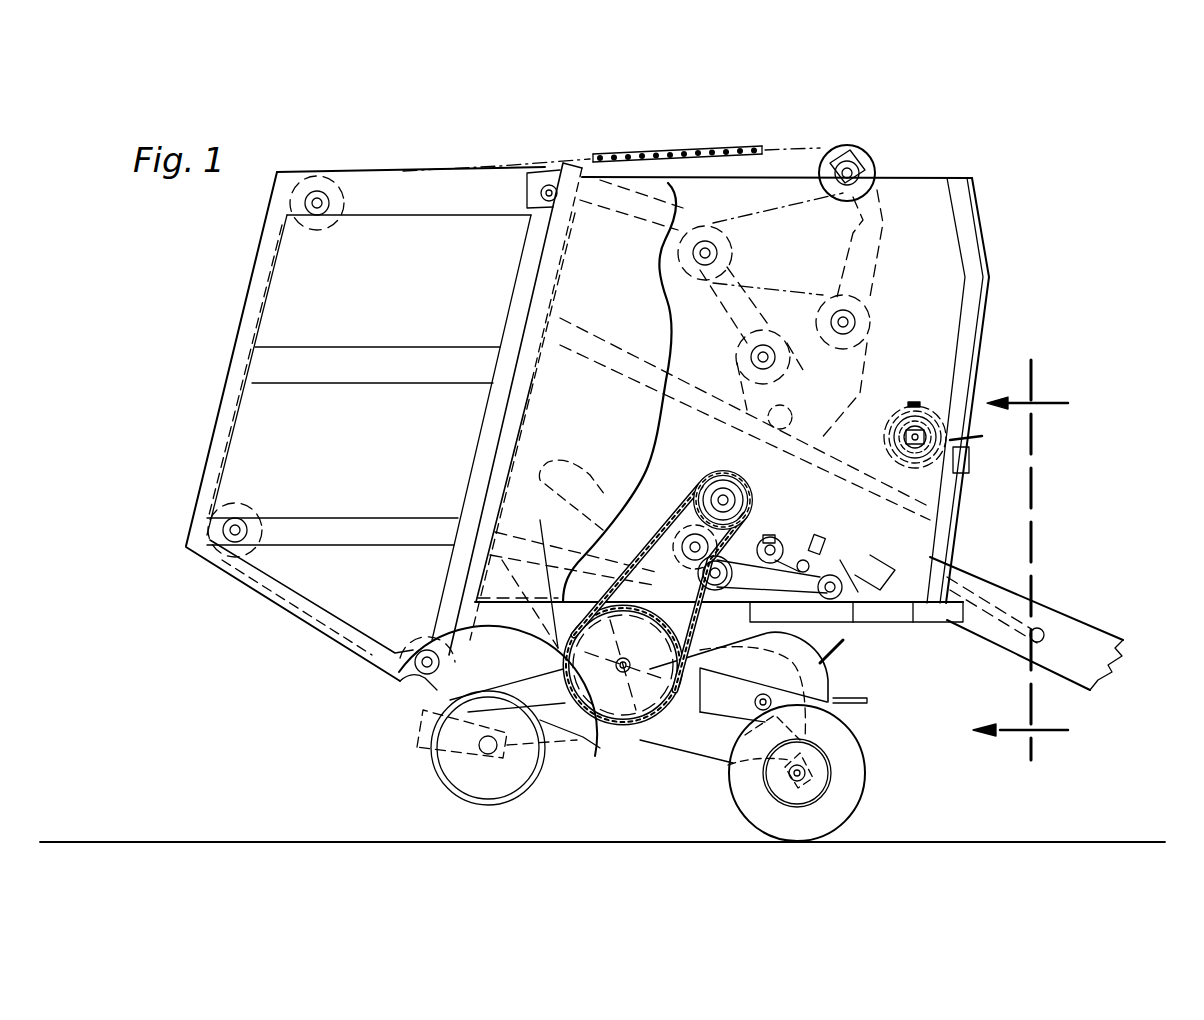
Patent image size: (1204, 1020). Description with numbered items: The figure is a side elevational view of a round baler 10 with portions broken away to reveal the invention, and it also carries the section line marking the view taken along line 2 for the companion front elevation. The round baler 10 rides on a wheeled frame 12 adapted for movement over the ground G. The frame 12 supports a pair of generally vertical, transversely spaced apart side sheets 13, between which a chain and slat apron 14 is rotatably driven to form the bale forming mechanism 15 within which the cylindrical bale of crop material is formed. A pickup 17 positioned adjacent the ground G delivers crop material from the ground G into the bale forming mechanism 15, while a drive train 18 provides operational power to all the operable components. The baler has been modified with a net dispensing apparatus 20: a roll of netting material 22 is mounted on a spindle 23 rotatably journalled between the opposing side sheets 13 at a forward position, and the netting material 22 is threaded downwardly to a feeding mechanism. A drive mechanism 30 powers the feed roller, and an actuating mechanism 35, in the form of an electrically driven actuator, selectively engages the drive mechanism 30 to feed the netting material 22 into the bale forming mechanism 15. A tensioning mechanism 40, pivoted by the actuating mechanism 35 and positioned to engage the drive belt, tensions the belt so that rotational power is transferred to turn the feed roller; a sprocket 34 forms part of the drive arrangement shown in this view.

The round baler 10 is at (990, 193).
The wheeled frame 12 is at (385, 770).
The side sheets 13 is at (950, 257).
The chain and slat apron 14 is at (648, 152).
The bale forming mechanism 15 is at (882, 150).
The pickup 17 is at (833, 682).
The drive train 18 is at (1037, 627).
The net dispensing apparatus 20 is at (990, 340).
The roll of netting material 22 is at (922, 406).
The spindle 23 is at (915, 430).
The drive mechanism 30 is at (765, 498).
The sprocket 34 is at (702, 500).
The actuating mechanism 35 is at (877, 563).
The tensioning mechanism 40 is at (803, 495).
The section line 2- 2 is at (1030, 560).
The ground G is at (926, 842).